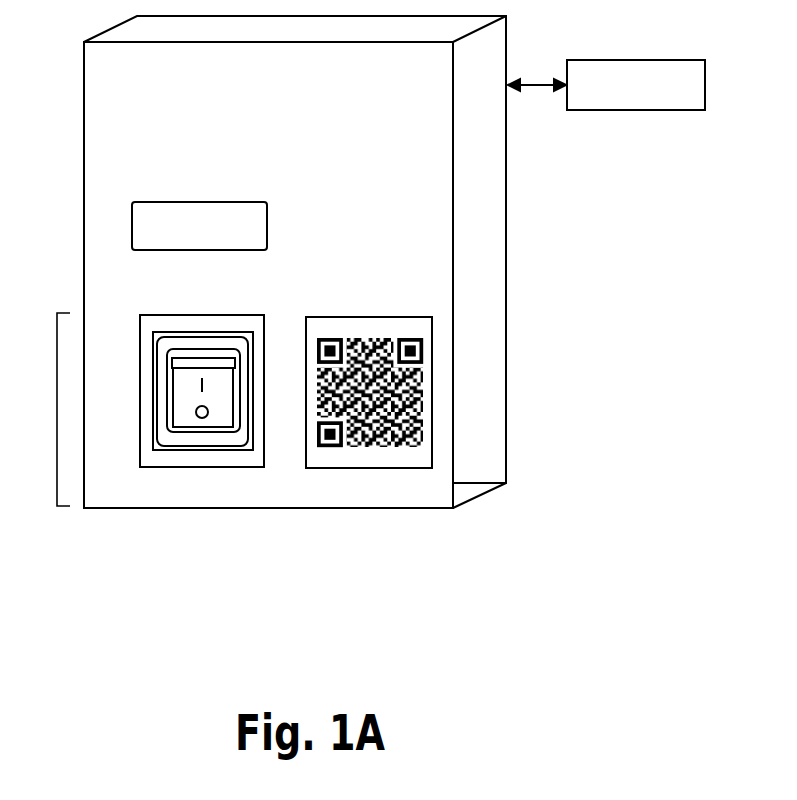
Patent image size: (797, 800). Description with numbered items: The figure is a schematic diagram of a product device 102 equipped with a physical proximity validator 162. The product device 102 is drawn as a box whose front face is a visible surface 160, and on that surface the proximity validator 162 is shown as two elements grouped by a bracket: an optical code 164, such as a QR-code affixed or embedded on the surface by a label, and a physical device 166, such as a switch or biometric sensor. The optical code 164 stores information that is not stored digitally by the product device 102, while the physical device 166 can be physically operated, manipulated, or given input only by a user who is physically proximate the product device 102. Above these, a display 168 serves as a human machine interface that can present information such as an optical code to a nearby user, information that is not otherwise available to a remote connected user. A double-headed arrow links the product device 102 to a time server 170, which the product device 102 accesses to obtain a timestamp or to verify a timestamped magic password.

The product device 102 is at (277, 86).
The visible surface 160 is at (99, 147).
The physical proximity validator 162 is at (57, 407).
The optical code 164 is at (341, 346).
The physical device 166 is at (176, 400).
The display 168 is at (267, 225).
The time server 170 is at (705, 85).